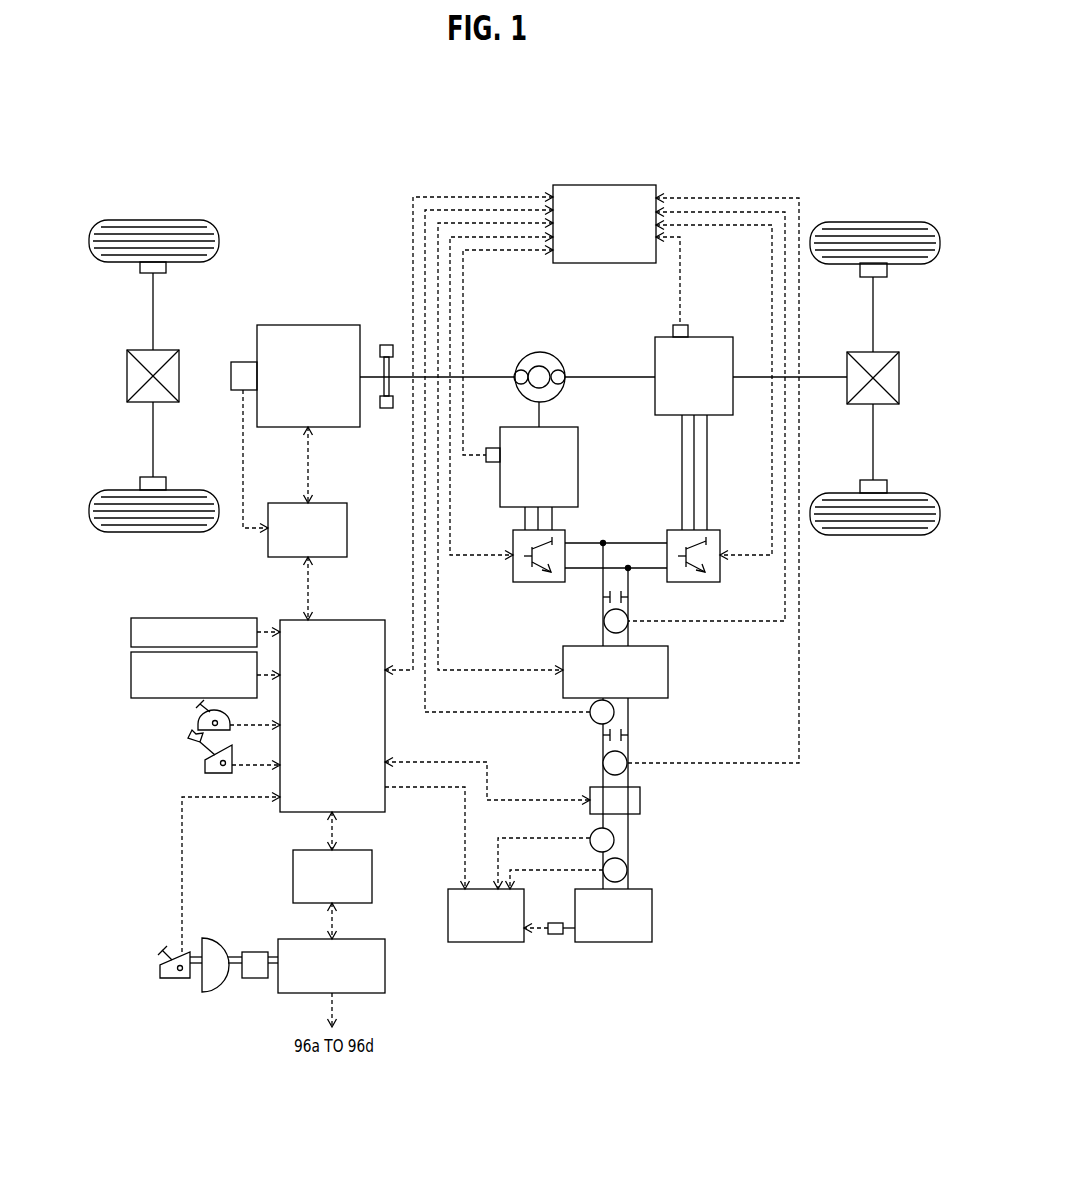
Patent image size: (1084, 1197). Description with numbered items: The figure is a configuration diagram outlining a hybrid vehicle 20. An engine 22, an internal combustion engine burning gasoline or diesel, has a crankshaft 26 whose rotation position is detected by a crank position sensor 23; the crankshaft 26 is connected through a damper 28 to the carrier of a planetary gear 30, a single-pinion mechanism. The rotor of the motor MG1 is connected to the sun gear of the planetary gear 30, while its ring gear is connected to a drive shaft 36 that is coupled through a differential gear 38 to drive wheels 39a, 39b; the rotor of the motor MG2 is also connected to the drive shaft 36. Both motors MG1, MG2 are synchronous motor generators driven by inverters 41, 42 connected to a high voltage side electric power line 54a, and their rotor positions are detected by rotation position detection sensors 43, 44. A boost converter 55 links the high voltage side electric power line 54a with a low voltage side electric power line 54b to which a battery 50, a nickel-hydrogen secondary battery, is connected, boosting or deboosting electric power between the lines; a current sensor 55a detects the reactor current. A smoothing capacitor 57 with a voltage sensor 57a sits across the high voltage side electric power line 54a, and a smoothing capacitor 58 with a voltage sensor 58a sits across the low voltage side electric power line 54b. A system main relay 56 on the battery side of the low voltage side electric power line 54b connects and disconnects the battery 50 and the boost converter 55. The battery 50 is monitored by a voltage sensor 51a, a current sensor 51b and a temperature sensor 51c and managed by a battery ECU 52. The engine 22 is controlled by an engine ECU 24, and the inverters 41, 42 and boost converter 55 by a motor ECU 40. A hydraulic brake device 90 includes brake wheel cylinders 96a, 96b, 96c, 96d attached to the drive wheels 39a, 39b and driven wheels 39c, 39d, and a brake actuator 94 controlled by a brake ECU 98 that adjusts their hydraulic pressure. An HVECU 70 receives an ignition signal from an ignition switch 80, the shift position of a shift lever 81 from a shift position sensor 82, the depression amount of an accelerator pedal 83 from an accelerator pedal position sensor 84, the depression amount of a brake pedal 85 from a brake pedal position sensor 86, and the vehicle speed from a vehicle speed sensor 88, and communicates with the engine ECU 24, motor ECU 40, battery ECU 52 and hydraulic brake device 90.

The hybrid vehicle 20 is at (722, 158).
The engine 22 is at (308, 325).
The crank position sensor 23 is at (243, 360).
The engine ECU 24 is at (330, 503).
The crankshaft 26 is at (363, 382).
The damper 28 is at (386, 345).
The planetary gear 30 is at (540, 352).
The drive shaft 36 is at (820, 377).
The differential gear 38 is at (885, 352).
The drive wheel 39a is at (874, 220).
The drive wheel 39b is at (872, 537).
The driven wheel 39c is at (160, 218).
The driven wheel 39d is at (158, 532).
The motor ECU 40 is at (601, 185).
The inverter 41 is at (566, 530).
The inverter 42 is at (715, 530).
The rotation position detection sensor 43 is at (490, 462).
The rotation position detection sensor 44 is at (684, 325).
The battery 50 is at (652, 915).
The voltage sensor 51a is at (628, 870).
The current sensor 51b is at (615, 840).
The temperature sensor 51c is at (555, 935).
The battery ECU 52 is at (486, 943).
The high voltage side electric power line 54a is at (604, 630).
The low voltage side electric power line 54b is at (603, 740).
The boost converter 55 is at (668, 672).
The current sensor 55a is at (615, 712).
The system main relay 56 is at (640, 800).
The smoothing capacitor 57 is at (630, 598).
The voltage sensor 57a is at (581, 621).
The smoothing capacitor 58 is at (630, 736).
The voltage sensor 58a is at (581, 755).
The HVECU 70 is at (345, 620).
The ignition switch 80 is at (131, 630).
The shift lever 81 is at (164, 718).
The shift position sensor 82 is at (198, 727).
The accelerator pedal 83 is at (165, 762).
The accelerator pedal position sensor 84 is at (205, 768).
The brake pedal 85 is at (138, 958).
The brake pedal position sensor 86 is at (160, 968).
The vehicle speed sensor 88 is at (131, 672).
The hydraulic brake device 90 is at (229, 888).
The brake actuator 94 is at (385, 965).
The brake wheel cylinder 96a is at (887, 270).
The brake wheel cylinder 96b is at (887, 483).
The brake wheel cylinder 96c is at (166, 268).
The brake wheel cylinder 96d is at (166, 483).
The brake ECU 98 is at (372, 873).
The motor MG1 is at (580, 454).
The motor MG2 is at (718, 337).